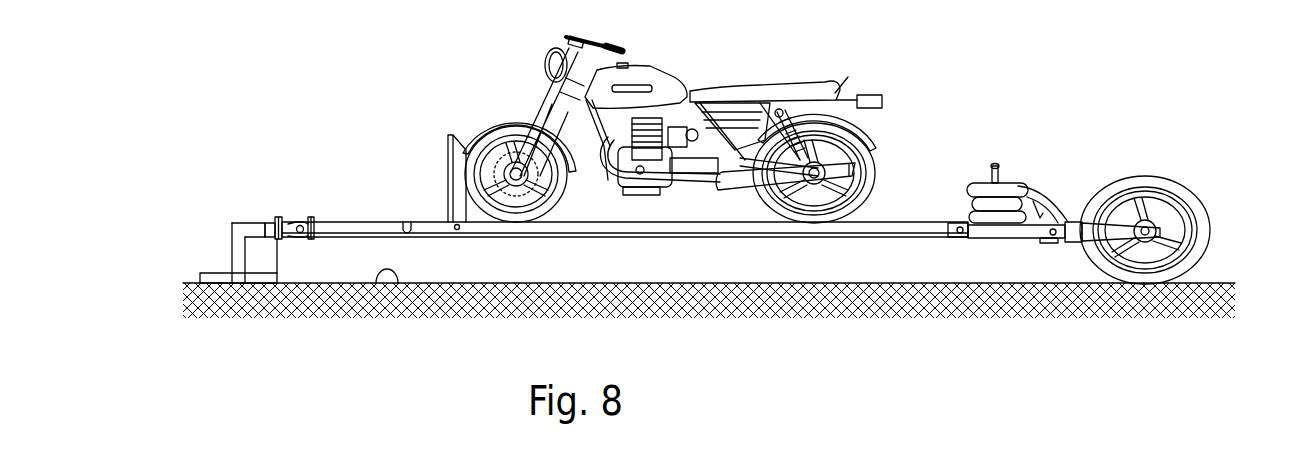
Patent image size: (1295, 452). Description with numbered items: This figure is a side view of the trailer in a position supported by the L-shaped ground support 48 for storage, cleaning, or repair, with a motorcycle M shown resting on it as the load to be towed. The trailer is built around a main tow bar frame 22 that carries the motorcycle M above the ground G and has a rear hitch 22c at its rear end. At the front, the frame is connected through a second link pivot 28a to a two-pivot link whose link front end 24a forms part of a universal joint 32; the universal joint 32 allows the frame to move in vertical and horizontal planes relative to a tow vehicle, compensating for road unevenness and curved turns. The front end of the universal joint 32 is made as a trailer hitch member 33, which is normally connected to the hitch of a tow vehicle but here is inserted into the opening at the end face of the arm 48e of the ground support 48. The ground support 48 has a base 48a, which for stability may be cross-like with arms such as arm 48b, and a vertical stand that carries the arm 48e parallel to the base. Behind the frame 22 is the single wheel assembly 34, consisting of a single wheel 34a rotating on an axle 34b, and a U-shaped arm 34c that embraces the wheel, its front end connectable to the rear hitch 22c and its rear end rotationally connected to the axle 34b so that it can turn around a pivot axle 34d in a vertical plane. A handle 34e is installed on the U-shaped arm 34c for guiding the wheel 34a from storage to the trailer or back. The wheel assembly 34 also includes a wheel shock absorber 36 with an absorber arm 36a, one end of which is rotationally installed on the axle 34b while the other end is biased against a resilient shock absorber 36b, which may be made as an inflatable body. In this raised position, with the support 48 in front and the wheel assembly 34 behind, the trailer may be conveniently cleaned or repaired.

The main tow bar frame 22 is at (607, 247).
The rear hitch 22c is at (929, 218).
The link front end 24a is at (302, 220).
The second link pivot 28a is at (405, 223).
The universal joint 32 is at (276, 216).
The trailer hitch member 33 is at (270, 240).
The single wheel assembly 34 is at (1119, 237).
The single wheel 34a is at (1190, 205).
The axle 34b is at (1145, 222).
The U-shaped arm 34c is at (1088, 225).
The pivot axle 34d is at (1055, 238).
The handle 34e is at (995, 163).
The wheel shock absorber 36 is at (1030, 202).
The absorber arm 36a is at (1033, 200).
The resilient shock absorber 36b is at (1000, 218).
The L-shaped ground support 48 is at (163, 271).
The base 48a is at (252, 282).
The arm 48b is at (205, 262).
The arm 48e is at (255, 222).
The ground G is at (381, 270).
The motorcycle M is at (712, 70).